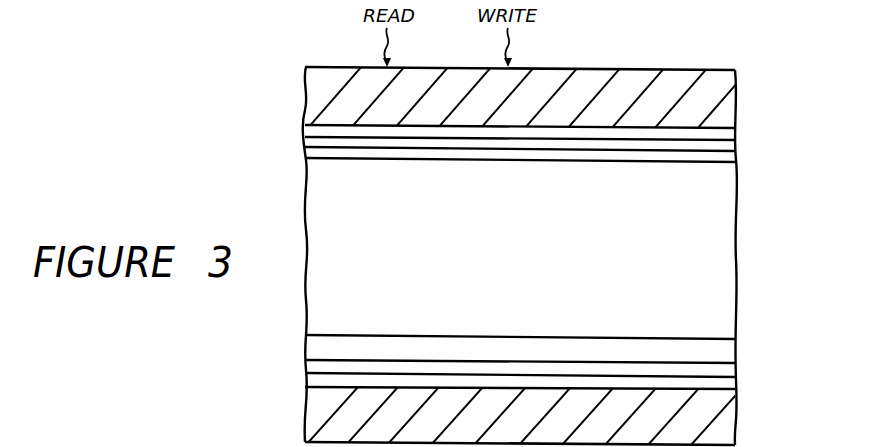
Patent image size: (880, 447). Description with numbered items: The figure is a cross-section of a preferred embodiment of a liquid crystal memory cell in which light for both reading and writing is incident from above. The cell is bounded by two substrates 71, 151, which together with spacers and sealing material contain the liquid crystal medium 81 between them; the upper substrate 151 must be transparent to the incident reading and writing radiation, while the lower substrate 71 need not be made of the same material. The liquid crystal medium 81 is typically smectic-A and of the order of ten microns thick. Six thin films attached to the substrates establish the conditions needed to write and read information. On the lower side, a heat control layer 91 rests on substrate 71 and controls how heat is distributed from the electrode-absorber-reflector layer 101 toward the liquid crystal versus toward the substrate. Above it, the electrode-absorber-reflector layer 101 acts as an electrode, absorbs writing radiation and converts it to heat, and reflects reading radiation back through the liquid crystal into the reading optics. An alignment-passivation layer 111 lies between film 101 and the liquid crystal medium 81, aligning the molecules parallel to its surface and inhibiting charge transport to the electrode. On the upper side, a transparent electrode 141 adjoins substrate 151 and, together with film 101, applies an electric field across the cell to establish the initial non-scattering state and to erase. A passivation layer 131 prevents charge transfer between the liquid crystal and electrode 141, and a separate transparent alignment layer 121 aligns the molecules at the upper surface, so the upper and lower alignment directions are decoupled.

The substrate 151 is at (736, 102).
The transparent electrode 141 is at (736, 130).
The passivation layer 131 is at (736, 149).
The alignment layer 121 is at (736, 161).
The liquid crystal medium 81 is at (738, 276).
The alignment-passivation layer 111 is at (736, 351).
The electrode-absorber-reflector layer 101 is at (736, 370).
The heat control layer 91 is at (736, 382).
The substrate 71 is at (736, 415).